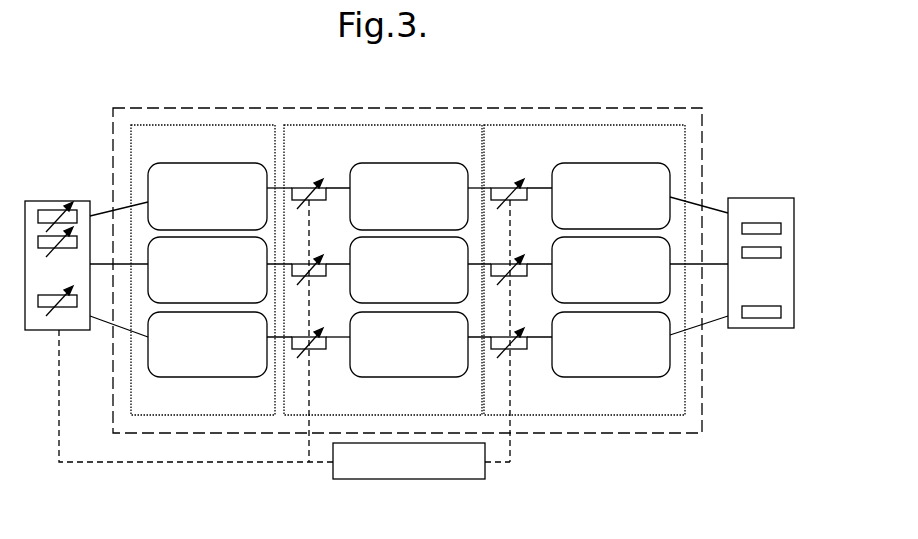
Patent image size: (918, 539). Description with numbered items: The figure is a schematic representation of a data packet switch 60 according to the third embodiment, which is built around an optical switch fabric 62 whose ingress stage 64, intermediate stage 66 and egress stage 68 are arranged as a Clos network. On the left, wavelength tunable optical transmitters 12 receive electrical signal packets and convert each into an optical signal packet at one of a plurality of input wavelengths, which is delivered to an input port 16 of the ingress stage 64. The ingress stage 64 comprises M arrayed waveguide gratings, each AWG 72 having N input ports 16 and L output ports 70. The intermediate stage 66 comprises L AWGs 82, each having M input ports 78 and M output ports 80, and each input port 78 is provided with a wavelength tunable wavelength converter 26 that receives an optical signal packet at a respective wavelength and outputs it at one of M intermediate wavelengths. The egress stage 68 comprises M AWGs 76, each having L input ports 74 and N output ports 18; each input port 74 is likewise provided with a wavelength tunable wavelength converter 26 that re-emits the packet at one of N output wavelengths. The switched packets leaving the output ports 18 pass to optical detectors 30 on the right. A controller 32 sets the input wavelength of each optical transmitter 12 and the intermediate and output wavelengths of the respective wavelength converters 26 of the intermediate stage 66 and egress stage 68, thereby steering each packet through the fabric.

The wavelength tunable optical transmitter 12 is at (56, 209).
The input port 16 is at (148, 337).
The output port 18 is at (670, 197).
The wavelength tunable wavelength converter 26 is at (333, 190).
The optical detector 30 is at (753, 318).
The controller 32 is at (448, 470).
The packet switch 60 is at (650, 101).
The optical switch fabric 62 is at (228, 117).
The ingress stage 64 is at (148, 407).
The intermediate stage 66 is at (297, 408).
The egress stage 68 is at (587, 406).
The output port 70 is at (268, 187).
The AWG 72 is at (248, 372).
The input port 74 is at (538, 189).
The AWG 76 is at (655, 368).
The input port 78 is at (348, 338).
The output port 80 is at (472, 187).
The AWG 82 is at (441, 377).